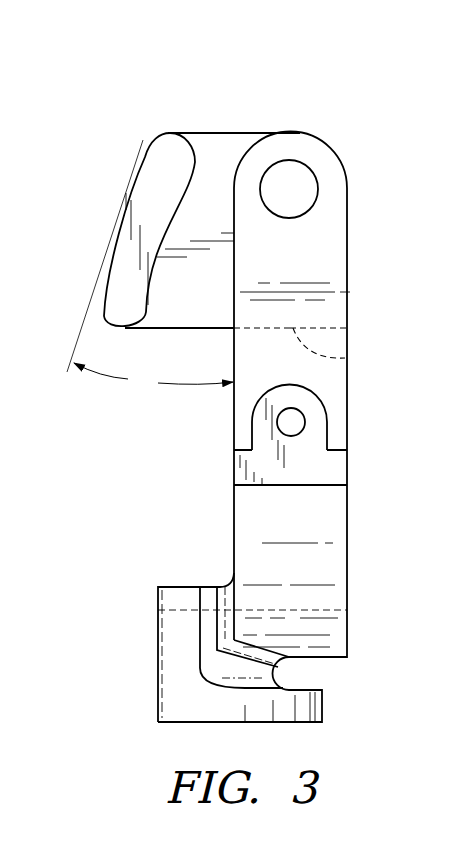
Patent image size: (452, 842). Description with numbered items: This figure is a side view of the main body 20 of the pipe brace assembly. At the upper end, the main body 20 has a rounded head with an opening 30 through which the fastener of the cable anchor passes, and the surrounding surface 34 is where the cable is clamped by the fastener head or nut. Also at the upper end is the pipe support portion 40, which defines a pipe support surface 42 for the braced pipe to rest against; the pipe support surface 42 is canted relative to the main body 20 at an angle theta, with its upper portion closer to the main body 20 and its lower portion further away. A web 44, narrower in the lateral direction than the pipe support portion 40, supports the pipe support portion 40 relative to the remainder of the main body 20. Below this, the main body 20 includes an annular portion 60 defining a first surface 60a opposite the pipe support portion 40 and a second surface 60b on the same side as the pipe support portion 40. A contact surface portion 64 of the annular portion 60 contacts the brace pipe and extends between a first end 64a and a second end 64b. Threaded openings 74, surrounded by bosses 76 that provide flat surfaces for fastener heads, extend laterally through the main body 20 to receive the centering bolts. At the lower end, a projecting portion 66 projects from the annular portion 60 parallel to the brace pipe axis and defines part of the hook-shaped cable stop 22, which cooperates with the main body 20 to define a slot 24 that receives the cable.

The main body 20 is at (339, 100).
The cable stop 22 is at (322, 706).
The slot or groove 24 is at (296, 668).
The opening 30 is at (316, 212).
The surface 34 is at (315, 152).
The pipe support portion 40 is at (141, 51).
The pipe support surface 42 is at (133, 174).
The web 44 is at (218, 143).
The annular portion 60 is at (349, 547).
The first surface 60a is at (347, 590).
The second surface 60b is at (234, 548).
The contact surface portion 64 is at (345, 358).
The first end 64a is at (323, 328).
The second end 64b is at (234, 329).
The projecting portion 66 is at (148, 673).
The threaded openings 74 is at (305, 422).
The bosses 76 is at (310, 403).